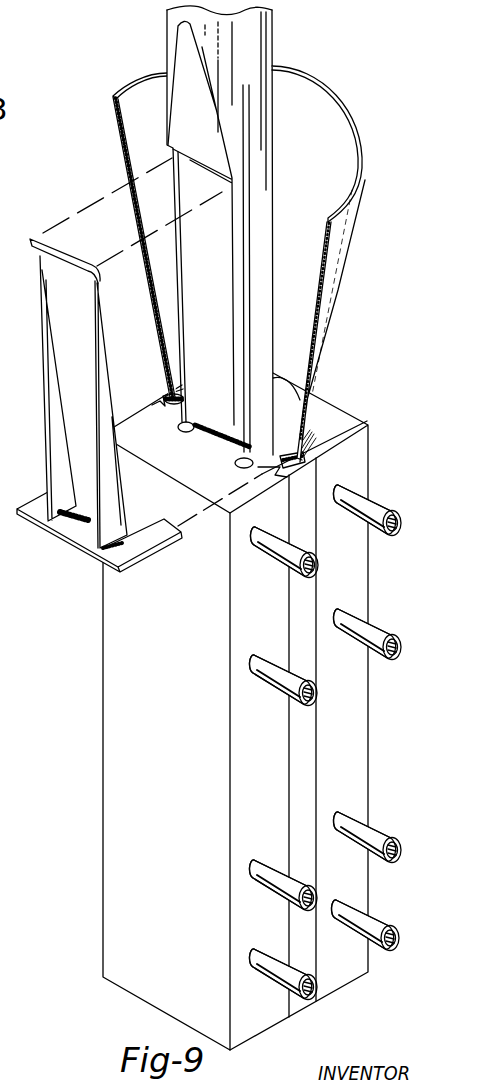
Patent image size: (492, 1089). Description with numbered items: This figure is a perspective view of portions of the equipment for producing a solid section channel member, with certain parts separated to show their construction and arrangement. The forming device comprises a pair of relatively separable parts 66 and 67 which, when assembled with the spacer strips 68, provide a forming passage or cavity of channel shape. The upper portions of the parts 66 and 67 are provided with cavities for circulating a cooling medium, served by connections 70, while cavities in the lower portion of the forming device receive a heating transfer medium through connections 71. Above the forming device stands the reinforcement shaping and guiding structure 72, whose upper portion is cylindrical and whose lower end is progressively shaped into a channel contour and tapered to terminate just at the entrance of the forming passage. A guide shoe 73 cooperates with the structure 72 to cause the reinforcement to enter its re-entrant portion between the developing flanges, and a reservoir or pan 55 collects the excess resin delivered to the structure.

The reservoir or pan 55 is at (327, 300).
The separable part of the forming device 66 is at (110, 788).
The separable part of the forming device 67 is at (350, 715).
The spacer strips 68 is at (305, 798).
The connections for cooling medium 70 is at (396, 532).
The connections for heating transfer medium 71 is at (318, 891).
The reinforcement shaping and guiding structure 72 is at (275, 43).
The guide shoe 73 is at (60, 389).